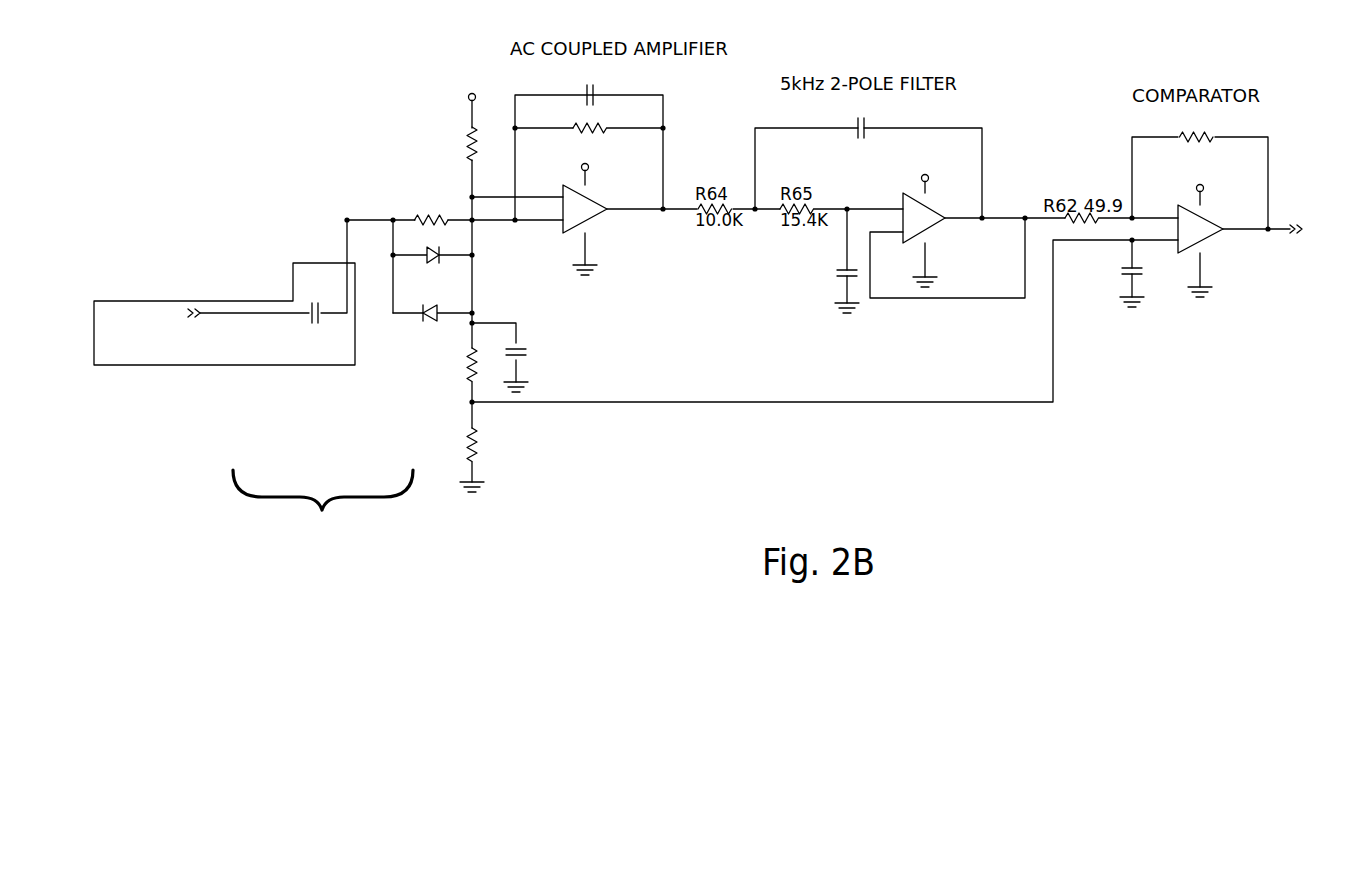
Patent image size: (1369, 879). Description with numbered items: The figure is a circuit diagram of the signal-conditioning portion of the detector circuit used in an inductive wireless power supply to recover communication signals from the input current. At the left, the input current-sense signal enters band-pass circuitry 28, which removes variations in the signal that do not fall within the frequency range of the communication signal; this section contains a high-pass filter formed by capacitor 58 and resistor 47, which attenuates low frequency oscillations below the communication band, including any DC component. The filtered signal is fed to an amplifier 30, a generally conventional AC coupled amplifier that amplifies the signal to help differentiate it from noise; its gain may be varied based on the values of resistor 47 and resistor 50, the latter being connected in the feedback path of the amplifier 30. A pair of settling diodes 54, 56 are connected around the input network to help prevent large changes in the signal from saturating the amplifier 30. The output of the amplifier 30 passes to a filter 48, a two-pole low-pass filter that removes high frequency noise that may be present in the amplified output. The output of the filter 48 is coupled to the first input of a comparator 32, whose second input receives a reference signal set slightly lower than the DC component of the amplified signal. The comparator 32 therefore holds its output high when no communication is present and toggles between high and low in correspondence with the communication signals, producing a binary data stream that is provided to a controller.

The band-pass circuitry 28 is at (342, 305).
The amplifier 30 is at (608, 208).
The comparator 32 is at (1167, 326).
The resistor 47 is at (425, 224).
The filter 48 is at (975, 106).
The resistor 50 is at (594, 130).
The settling diode 54 is at (441, 250).
The settling diode 56 is at (423, 313).
The capacitor 58 is at (310, 318).